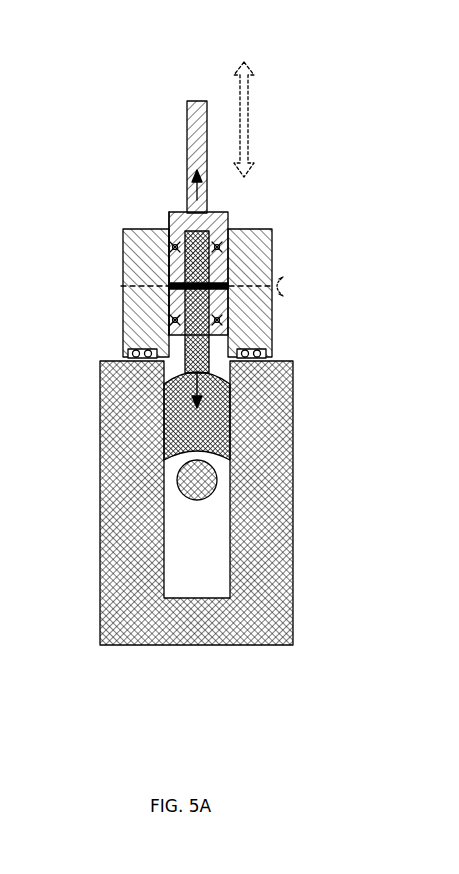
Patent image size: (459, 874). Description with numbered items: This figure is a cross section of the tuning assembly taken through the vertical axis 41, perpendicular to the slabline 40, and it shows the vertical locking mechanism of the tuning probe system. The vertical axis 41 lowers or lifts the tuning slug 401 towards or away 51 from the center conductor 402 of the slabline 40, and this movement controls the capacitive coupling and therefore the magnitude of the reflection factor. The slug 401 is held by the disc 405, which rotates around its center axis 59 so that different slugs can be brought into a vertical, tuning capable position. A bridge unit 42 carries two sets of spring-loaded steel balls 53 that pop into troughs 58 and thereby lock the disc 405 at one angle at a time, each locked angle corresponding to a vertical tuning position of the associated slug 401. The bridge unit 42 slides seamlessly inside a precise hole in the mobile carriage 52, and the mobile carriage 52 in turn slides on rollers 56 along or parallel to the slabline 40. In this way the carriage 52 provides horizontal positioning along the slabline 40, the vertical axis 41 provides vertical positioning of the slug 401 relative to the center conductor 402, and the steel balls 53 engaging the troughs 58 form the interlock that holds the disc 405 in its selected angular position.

The slabline 40 is at (294, 428).
The tuning slug 401 is at (165, 398).
The center conductor 402 is at (178, 478).
The disc 405 is at (187, 345).
The vertical axis 41 is at (187, 123).
The bridge unit 42 is at (229, 223).
The vertical movement direction 51 is at (255, 117).
The mobile carriage 52 is at (272, 263).
The spring-loaded steel balls 53 is at (222, 247).
The rollers 56 is at (128, 353).
The troughs 58 is at (174, 240).
The center axis 59 is at (168, 284).